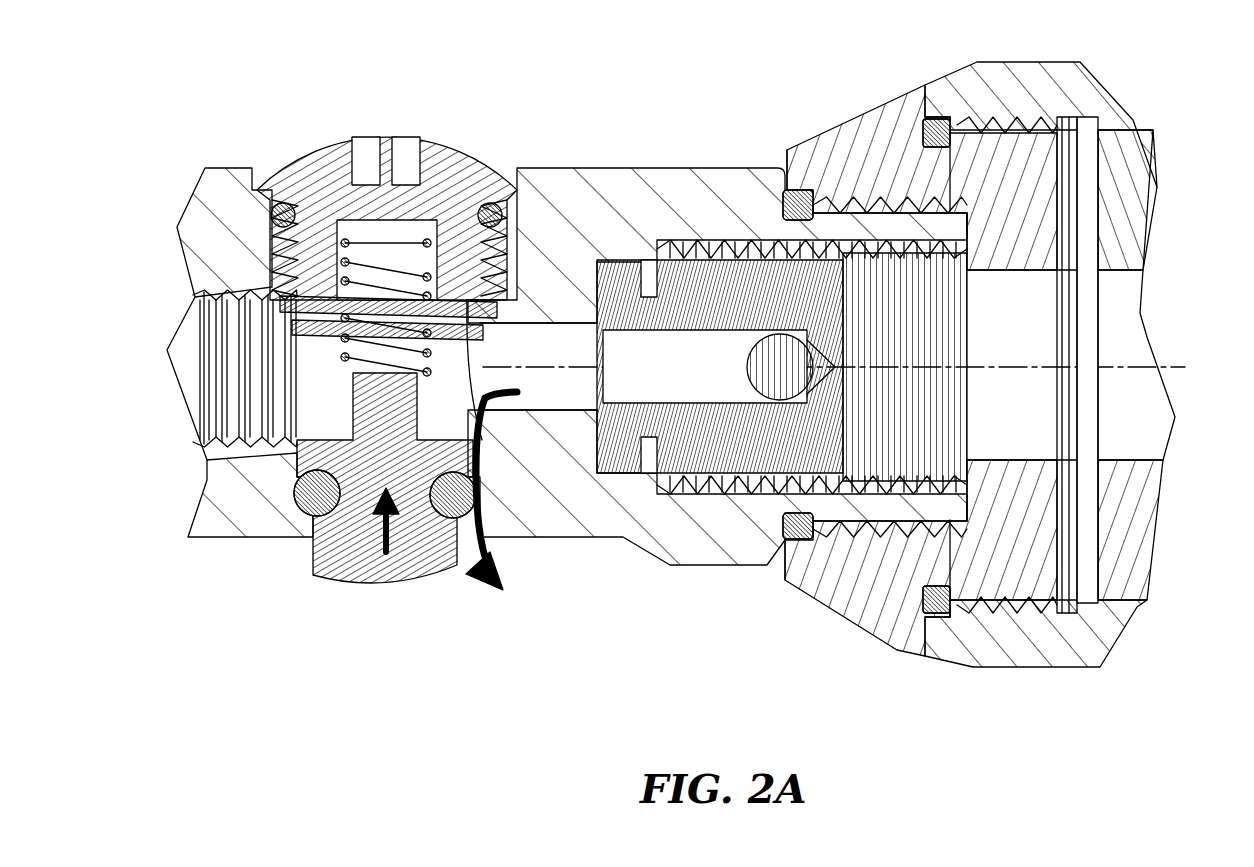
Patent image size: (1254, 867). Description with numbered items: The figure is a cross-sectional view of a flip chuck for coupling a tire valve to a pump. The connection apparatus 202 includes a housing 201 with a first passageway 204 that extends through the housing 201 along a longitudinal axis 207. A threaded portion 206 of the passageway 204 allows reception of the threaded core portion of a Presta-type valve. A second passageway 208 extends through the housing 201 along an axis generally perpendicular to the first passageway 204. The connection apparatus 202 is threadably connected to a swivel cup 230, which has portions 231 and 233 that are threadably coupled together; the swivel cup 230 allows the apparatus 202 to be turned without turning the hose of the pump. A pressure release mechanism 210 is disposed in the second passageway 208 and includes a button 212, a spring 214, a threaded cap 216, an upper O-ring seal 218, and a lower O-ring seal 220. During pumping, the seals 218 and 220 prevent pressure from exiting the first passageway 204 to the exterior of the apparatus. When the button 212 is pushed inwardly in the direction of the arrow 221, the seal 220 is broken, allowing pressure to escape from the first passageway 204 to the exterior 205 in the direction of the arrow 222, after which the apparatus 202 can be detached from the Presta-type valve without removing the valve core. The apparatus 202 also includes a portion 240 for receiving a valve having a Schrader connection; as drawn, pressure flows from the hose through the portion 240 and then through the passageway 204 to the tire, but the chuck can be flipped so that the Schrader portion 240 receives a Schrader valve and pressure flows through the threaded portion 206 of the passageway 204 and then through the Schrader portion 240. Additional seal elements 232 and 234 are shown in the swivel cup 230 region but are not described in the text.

The housing 201 is at (655, 168).
The connection apparatus 202 is at (565, 130).
The first passageway 204 is at (528, 420).
The exterior 205 is at (741, 746).
The threaded portion 206 is at (197, 345).
The longitudinal axis 207 is at (900, 375).
The second passageway 208 is at (468, 322).
The pressure release mechanism 210 is at (325, 600).
The button 212 is at (317, 578).
The spring 214 is at (280, 273).
The threaded cap 216 is at (303, 155).
The upper O-ring seal 218 is at (265, 226).
The lower O-ring seal 220 is at (300, 478).
The arrow 221 is at (395, 537).
The arrow 222 is at (488, 480).
The swivel cup 230 is at (845, 645).
The portion 231 is at (1110, 627).
The seal 232 is at (800, 520).
The portion 233 is at (1013, 600).
The seal 234 is at (920, 612).
The portion 240 is at (752, 245).